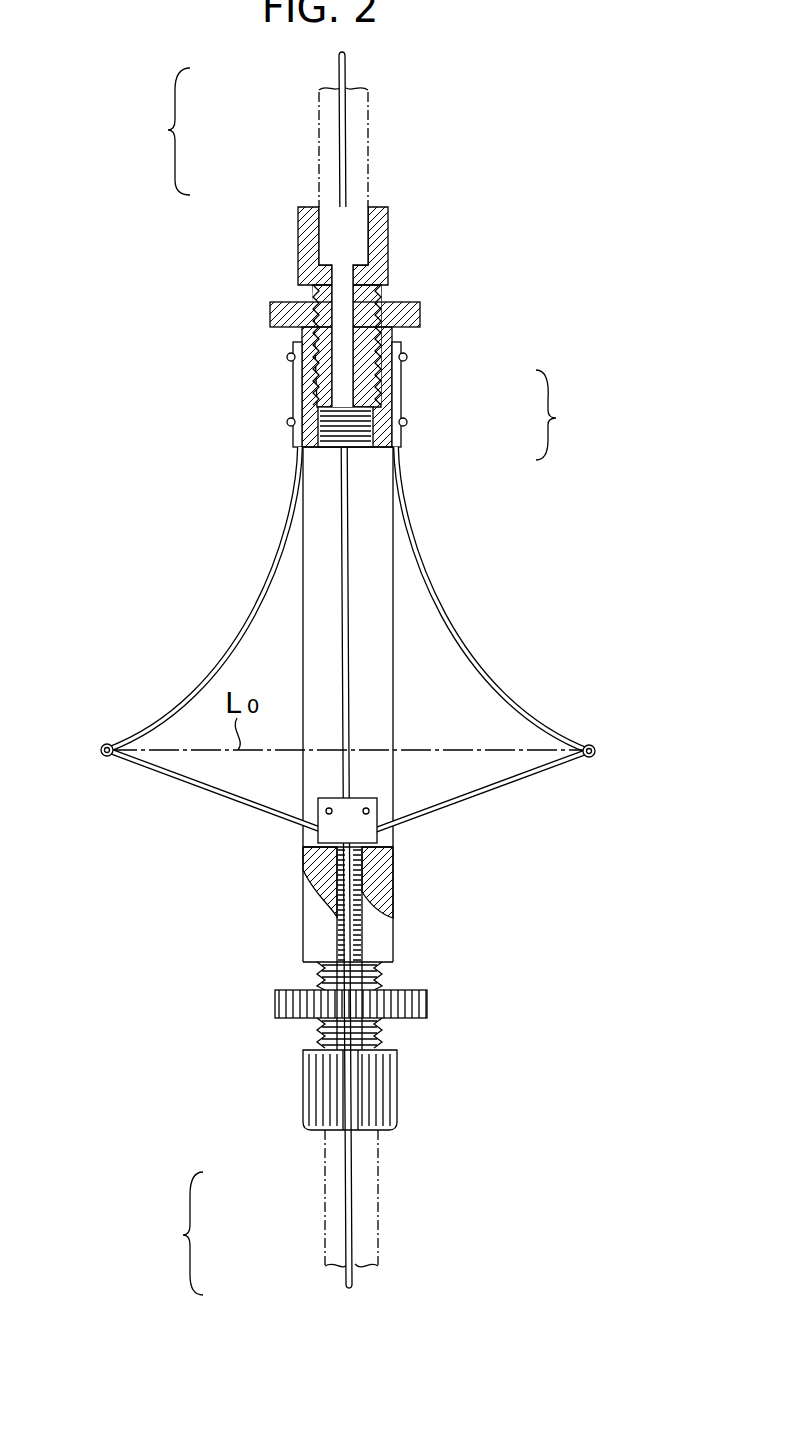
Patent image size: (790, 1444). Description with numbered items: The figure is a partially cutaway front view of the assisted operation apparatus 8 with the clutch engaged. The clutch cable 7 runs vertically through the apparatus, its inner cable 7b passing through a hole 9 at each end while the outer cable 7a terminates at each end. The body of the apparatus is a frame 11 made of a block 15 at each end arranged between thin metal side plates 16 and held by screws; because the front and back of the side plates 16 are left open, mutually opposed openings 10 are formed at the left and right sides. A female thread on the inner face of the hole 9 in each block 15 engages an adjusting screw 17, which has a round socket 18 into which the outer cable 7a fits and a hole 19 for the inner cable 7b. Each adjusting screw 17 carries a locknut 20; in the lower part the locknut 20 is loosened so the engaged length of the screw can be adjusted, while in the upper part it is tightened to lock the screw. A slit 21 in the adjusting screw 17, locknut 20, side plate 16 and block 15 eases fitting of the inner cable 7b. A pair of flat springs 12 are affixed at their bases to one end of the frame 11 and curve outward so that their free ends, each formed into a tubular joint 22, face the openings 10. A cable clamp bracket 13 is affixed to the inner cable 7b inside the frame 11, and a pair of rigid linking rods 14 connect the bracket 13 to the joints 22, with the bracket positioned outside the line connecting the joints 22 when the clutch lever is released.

The clutch cable 7 is at (171, 681).
The outer cable 7a is at (319, 172).
The inner cable 7b is at (340, 84).
The assisted operation apparatus 8 is at (188, 365).
The hole 9 is at (334, 445).
The openings 10 is at (302, 608).
The frame 11 is at (441, 401).
The flat springs 12 is at (207, 657).
The cable clamp bracket 13 is at (378, 803).
The linking rods 14 is at (170, 775).
The block 15 is at (386, 402).
The side plates 16 is at (402, 458).
The adjusting screws 17 is at (298, 247).
The round socket 18 is at (367, 210).
The hole 19 is at (352, 263).
The locknut 20 is at (420, 308).
The slit 21 is at (357, 1073).
The tubular joint 22 is at (100, 740).